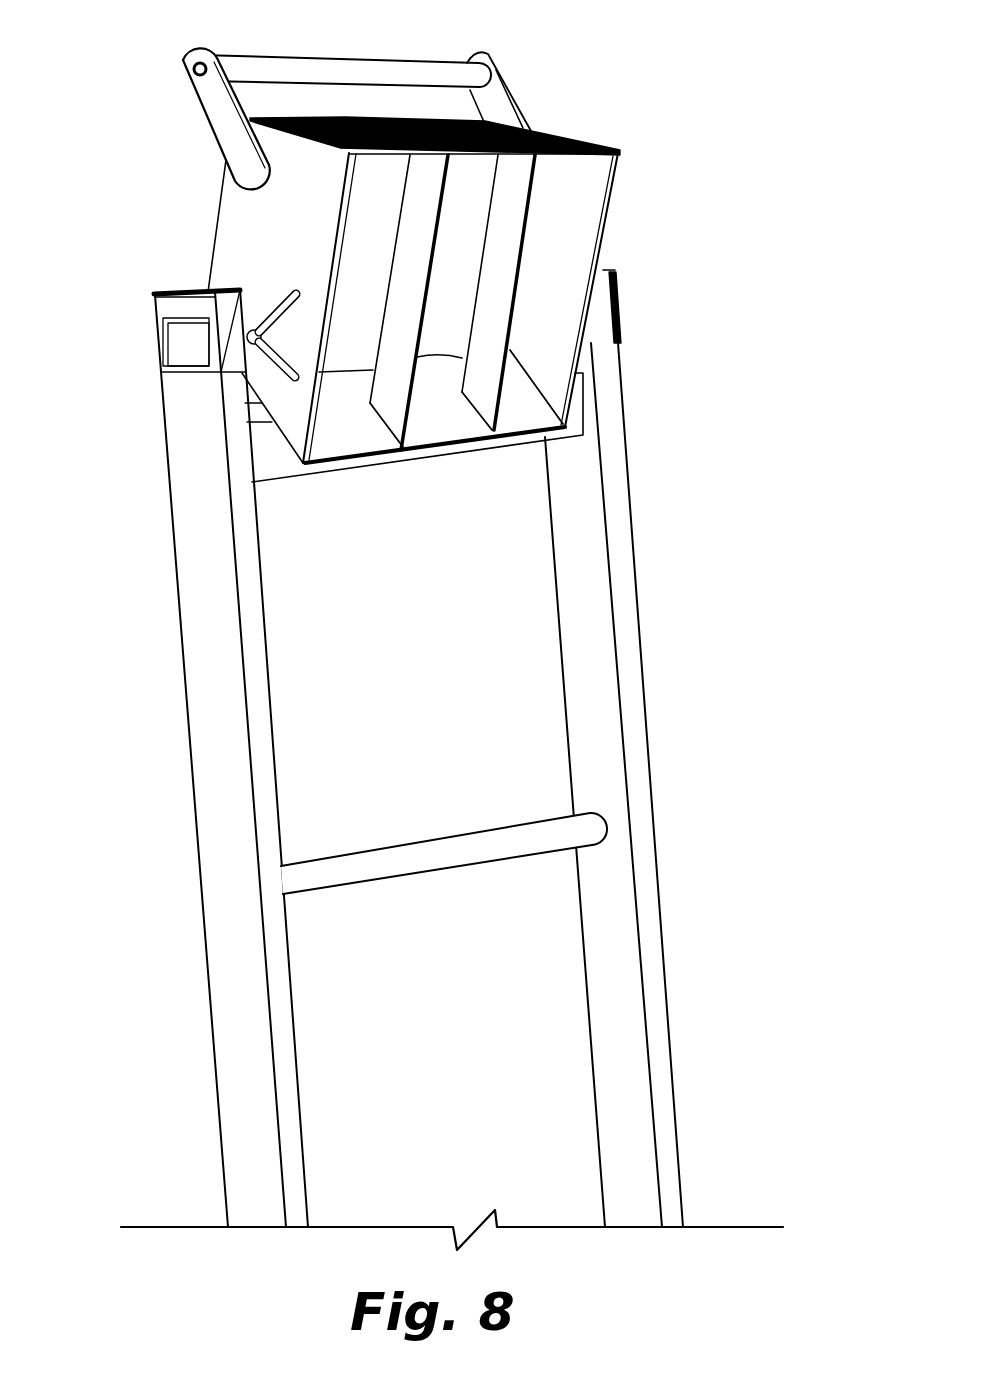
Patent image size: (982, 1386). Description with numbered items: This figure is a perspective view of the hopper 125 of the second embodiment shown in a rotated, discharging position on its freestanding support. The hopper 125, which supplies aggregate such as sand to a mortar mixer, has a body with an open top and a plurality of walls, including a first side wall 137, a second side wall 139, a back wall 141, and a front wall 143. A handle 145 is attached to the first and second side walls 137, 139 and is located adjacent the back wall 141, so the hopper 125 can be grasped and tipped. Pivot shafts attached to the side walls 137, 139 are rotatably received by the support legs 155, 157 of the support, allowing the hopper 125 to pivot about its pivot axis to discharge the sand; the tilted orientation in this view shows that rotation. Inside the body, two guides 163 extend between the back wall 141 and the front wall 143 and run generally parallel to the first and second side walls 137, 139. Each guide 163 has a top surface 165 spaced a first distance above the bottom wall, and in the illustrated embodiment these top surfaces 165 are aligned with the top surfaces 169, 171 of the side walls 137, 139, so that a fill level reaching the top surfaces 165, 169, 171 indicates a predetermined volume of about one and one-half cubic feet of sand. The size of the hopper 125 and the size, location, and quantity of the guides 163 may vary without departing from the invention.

The hopper 125 is at (564, 112).
The first side wall 137 is at (578, 245).
The second side wall 139 is at (265, 230).
The back wall 141 is at (370, 125).
The front wall 143 is at (358, 440).
The handle 145 is at (273, 70).
The support leg 155 is at (640, 906).
The support leg 157 is at (240, 985).
The guides 163 is at (510, 235).
The top surface of guides 165 is at (515, 302).
The top surface of first side wall 169 is at (605, 258).
The top surface of second side wall 171 is at (331, 276).